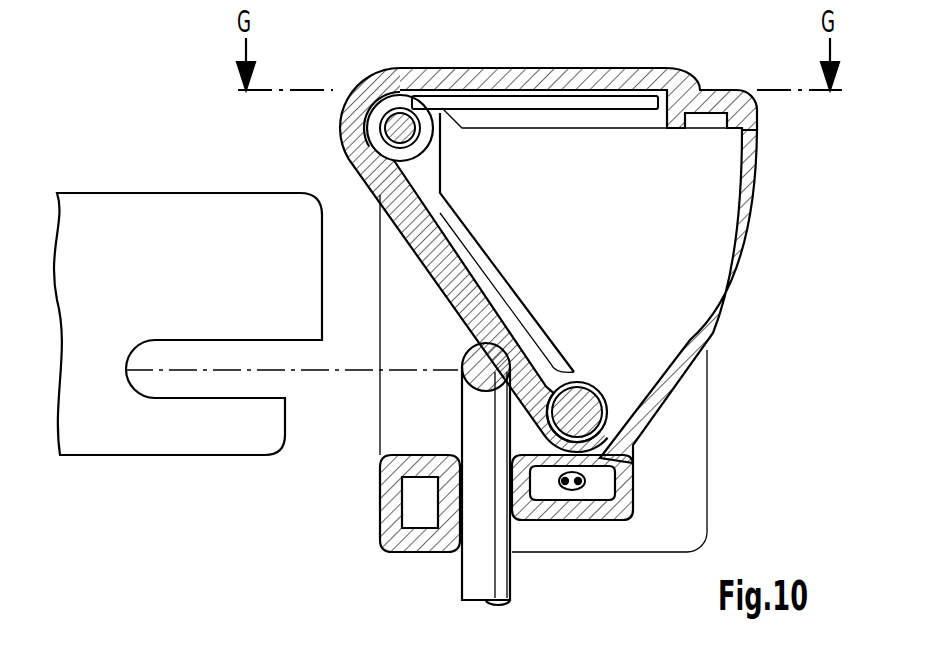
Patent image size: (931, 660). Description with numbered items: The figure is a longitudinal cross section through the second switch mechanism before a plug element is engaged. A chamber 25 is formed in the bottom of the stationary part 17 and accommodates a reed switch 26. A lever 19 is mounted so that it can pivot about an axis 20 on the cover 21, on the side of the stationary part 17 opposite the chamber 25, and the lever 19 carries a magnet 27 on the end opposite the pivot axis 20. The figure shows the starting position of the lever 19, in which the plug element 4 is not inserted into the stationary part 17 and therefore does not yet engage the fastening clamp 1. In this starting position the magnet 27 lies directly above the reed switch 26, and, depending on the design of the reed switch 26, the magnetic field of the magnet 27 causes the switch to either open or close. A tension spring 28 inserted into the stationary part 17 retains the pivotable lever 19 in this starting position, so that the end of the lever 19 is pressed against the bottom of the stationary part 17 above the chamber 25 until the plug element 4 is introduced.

The fastening clamp 1 is at (460, 363).
The plug element 4 is at (152, 210).
The stationary part 17 is at (745, 235).
The lever 19 is at (433, 243).
The axis 20 is at (397, 116).
The cover 21 is at (665, 78).
The chamber 25 is at (610, 488).
The reed switch 26 is at (572, 490).
The magnet 27 is at (593, 406).
The tension spring 28 is at (568, 98).